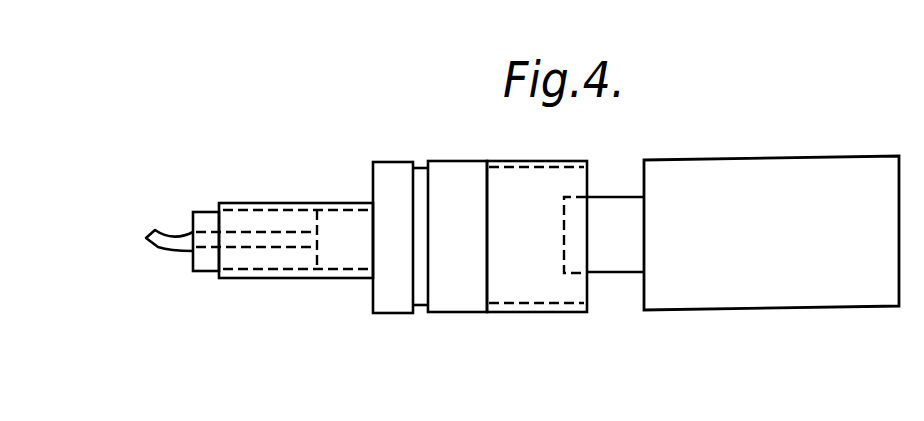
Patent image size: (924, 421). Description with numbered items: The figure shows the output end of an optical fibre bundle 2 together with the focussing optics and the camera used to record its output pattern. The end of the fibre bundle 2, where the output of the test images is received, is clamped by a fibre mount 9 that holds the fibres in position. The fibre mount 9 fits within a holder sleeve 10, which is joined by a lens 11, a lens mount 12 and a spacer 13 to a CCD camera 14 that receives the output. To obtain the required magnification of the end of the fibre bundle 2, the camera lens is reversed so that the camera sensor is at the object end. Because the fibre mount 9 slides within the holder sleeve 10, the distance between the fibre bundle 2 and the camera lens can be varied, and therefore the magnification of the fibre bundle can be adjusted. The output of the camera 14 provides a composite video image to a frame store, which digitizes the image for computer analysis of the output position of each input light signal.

The fibre bundle 2 is at (158, 250).
The fibre mount 9 is at (192, 273).
The holder sleeve 10 is at (255, 202).
The lens 11 is at (480, 137).
The lens mount 12 is at (530, 313).
The spacer 13 is at (608, 202).
The CCD camera 14 is at (787, 156).